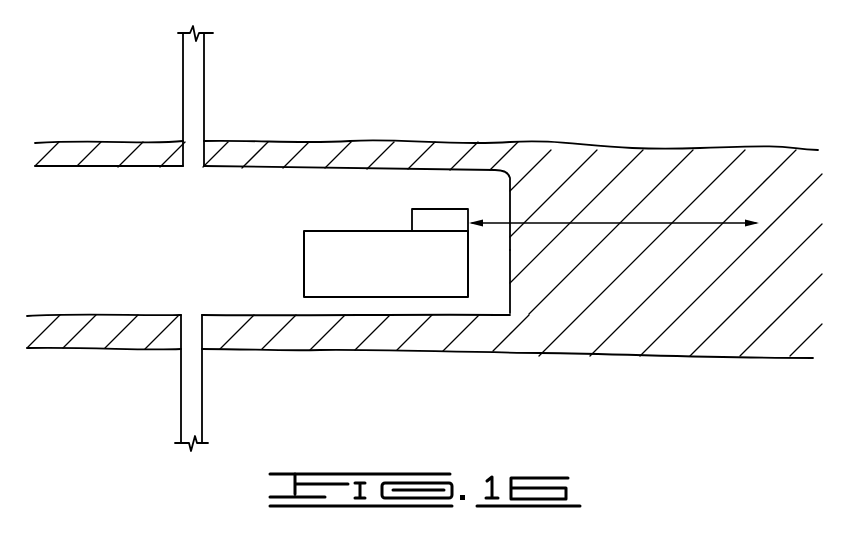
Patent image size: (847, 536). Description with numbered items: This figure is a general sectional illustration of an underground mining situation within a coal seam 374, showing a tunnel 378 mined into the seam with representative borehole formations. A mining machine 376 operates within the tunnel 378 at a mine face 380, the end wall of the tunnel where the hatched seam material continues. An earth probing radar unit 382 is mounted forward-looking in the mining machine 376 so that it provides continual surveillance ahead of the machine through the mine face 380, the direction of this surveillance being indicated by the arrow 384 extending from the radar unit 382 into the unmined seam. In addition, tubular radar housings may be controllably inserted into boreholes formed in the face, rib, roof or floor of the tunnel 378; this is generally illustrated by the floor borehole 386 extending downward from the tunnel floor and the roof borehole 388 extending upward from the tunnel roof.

The coal seam 374 is at (587, 171).
The mining machine 376 is at (303, 243).
The tunnel 378 is at (84, 315).
The mine face 380 is at (509, 189).
The earth probing radar unit 382 is at (422, 214).
The arrow 384 is at (657, 223).
The floor borehole 386 is at (203, 398).
The roof borehole 388 is at (204, 70).